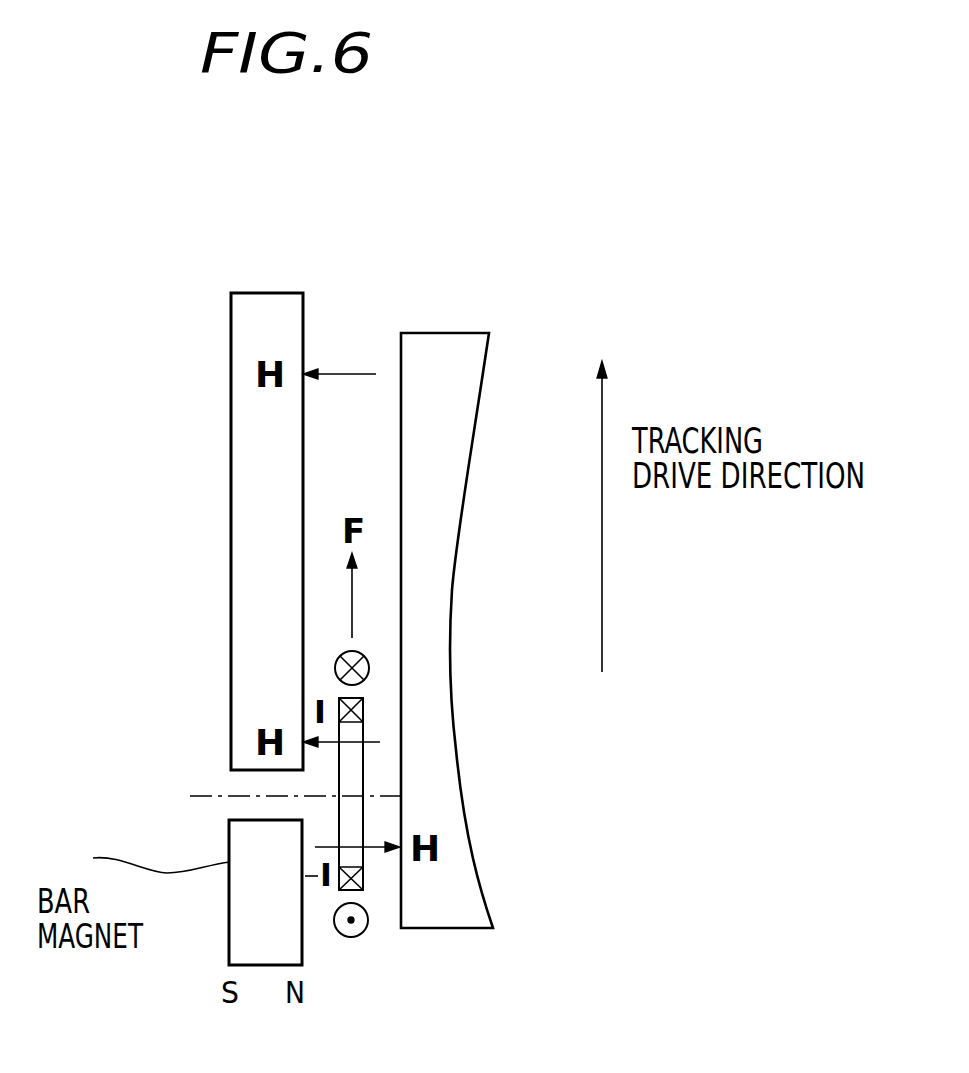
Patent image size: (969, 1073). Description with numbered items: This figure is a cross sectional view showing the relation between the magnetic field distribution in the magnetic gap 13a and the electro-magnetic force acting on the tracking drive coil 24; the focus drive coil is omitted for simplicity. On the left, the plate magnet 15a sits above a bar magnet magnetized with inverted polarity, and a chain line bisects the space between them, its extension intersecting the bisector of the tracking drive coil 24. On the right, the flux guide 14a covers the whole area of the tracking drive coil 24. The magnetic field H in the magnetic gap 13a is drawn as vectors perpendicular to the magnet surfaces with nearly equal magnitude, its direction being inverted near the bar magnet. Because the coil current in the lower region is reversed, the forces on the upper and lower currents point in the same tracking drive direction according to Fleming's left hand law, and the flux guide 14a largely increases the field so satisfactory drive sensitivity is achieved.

The magnetic gap 13a is at (350, 333).
The plate magnet 15a is at (245, 526).
The tracking drive coil 24 is at (363, 760).
The flux guide 14a is at (460, 917).